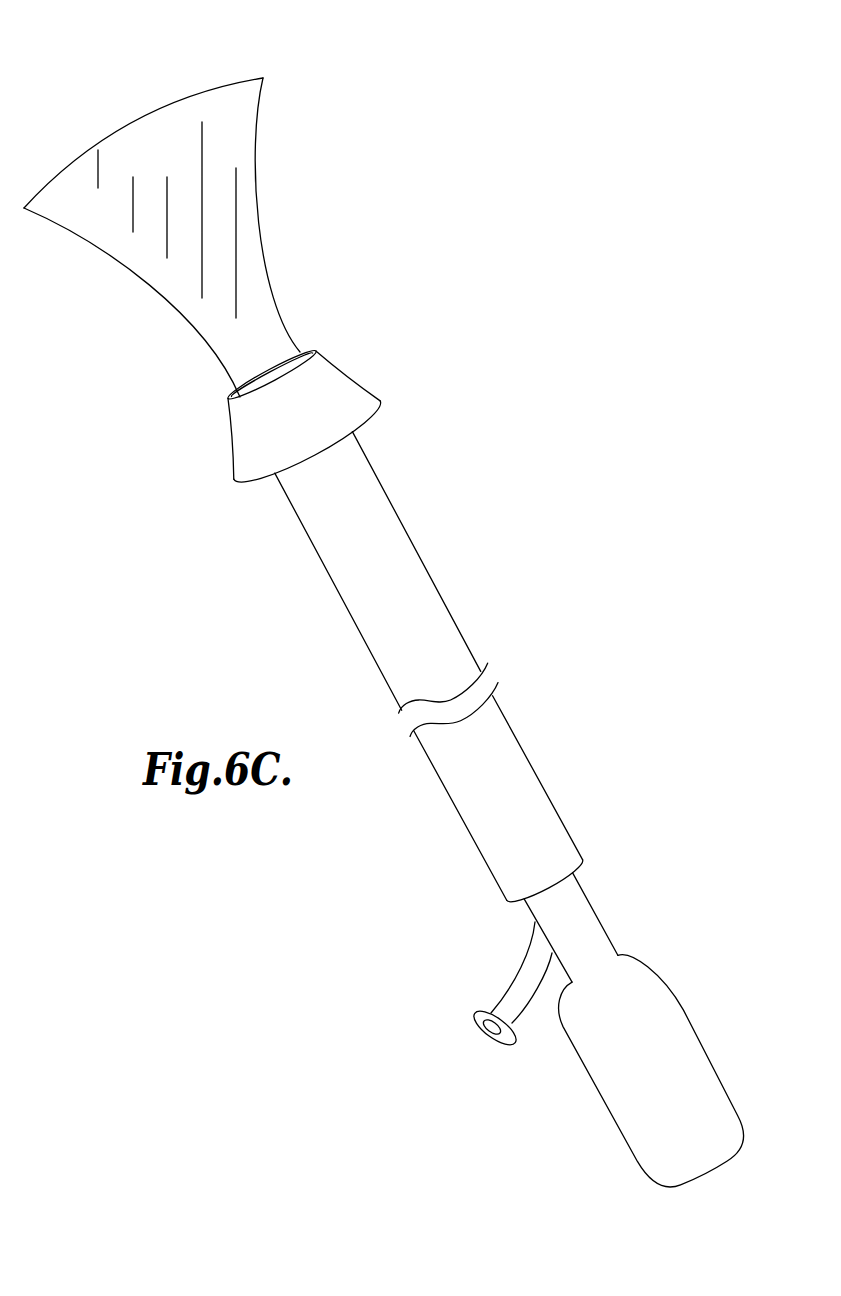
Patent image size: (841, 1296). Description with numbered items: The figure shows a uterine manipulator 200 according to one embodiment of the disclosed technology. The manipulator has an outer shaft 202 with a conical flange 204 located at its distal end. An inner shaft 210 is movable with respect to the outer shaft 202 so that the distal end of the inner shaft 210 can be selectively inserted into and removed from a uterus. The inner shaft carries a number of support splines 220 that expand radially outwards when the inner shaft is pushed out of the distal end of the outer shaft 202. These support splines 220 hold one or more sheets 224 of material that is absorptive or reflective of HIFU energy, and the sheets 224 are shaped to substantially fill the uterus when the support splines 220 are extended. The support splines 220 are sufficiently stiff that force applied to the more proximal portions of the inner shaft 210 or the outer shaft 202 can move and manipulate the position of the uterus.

The uterine manipulator 200 is at (439, 463).
The outer shaft 202 is at (346, 602).
The conical flange 204 is at (353, 390).
The inner shaft 210 is at (683, 1008).
The support splines 220 is at (257, 232).
The sheets 224 is at (217, 95).